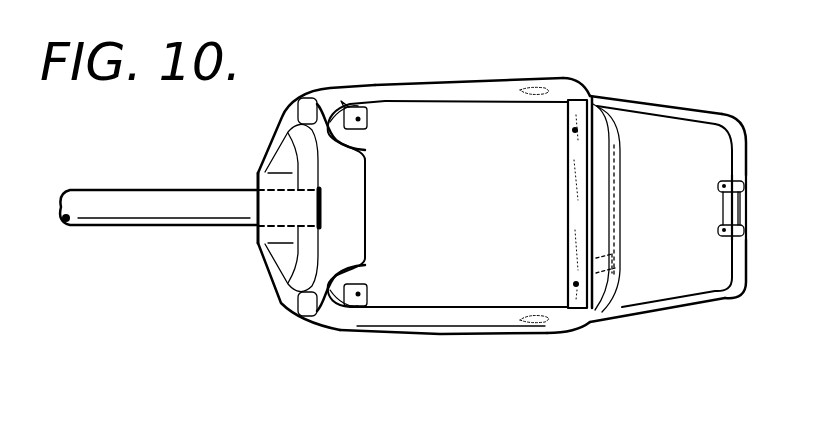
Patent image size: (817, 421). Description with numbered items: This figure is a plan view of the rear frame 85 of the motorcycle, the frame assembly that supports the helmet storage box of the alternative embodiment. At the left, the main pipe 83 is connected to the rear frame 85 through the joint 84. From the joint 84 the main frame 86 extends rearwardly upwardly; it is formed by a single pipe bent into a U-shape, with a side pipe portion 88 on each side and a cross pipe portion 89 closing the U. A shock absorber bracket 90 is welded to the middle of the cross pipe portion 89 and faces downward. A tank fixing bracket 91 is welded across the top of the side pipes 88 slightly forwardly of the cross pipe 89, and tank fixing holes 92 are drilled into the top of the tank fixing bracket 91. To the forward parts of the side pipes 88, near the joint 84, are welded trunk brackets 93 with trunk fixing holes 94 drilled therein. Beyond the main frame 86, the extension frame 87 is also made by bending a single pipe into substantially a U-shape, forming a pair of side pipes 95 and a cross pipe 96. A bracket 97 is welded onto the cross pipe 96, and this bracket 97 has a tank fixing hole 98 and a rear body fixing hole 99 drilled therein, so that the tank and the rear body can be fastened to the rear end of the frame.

The main pipe 83 is at (147, 196).
The joint 84 is at (253, 250).
The rear frame 85 is at (427, 343).
The main frame 86 is at (477, 70).
The extension frame 87 is at (732, 309).
The side pipe portion 88 is at (508, 82).
The cross pipe portion 89 is at (612, 192).
The shock absorber bracket 90 is at (612, 256).
The tank fixing bracket 91 is at (567, 212).
The tank fixing hole 92 is at (570, 130).
The trunk bracket 93 is at (367, 120).
The trunk fixing hole 94 is at (362, 135).
The side pipe 95 is at (648, 106).
The cross pipe 96 is at (746, 152).
The bracket 97 is at (742, 246).
The tank fixing hole 98 is at (720, 230).
The rear body fixing hole 99 is at (746, 235).